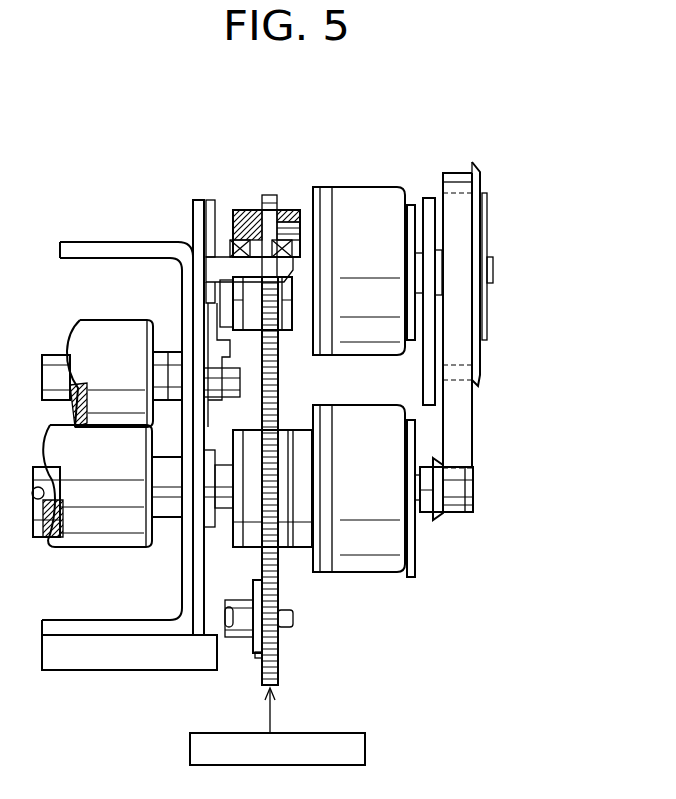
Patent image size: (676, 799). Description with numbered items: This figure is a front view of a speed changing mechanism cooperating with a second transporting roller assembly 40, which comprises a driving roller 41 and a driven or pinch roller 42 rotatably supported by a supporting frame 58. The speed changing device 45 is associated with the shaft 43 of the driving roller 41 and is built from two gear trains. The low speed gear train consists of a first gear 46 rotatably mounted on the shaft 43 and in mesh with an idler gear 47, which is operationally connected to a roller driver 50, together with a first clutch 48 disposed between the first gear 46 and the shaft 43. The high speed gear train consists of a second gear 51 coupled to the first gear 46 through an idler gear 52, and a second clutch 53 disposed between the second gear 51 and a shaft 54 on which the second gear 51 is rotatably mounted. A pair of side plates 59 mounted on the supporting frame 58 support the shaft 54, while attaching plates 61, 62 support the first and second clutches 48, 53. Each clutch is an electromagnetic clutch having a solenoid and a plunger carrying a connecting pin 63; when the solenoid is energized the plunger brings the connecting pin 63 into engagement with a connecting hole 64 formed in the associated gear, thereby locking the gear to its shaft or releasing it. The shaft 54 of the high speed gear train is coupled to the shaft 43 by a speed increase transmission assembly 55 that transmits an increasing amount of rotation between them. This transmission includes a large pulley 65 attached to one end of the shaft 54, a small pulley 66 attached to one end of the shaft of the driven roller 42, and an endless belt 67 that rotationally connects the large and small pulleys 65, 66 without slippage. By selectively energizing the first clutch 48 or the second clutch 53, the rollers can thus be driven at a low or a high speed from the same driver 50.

The roller unit 40 is at (104, 343).
The driving roller 41 is at (102, 548).
The driven roller 42 is at (82, 337).
The shaft 43 is at (42, 510).
The speed changing device 45 is at (359, 118).
The first gear 46 is at (278, 530).
The idler gear 47 is at (280, 664).
The first clutch 48 is at (393, 541).
The driver 50 is at (367, 752).
The second gear 51 is at (272, 193).
The idler gear 52 is at (282, 405).
The second clutch 53 is at (380, 186).
The shaft 54 is at (222, 263).
The speed increase transmission assembly 55 is at (495, 327).
The supporting frame 58 is at (97, 250).
The side plates 59 is at (197, 210).
The attaching plate 61 is at (413, 568).
The attaching plate 62 is at (412, 203).
The connecting pin 63 is at (297, 210).
The connecting hole 64 is at (247, 222).
The large pulley 65 is at (480, 170).
The small pulley 66 is at (473, 485).
The endless belt 67 is at (465, 427).